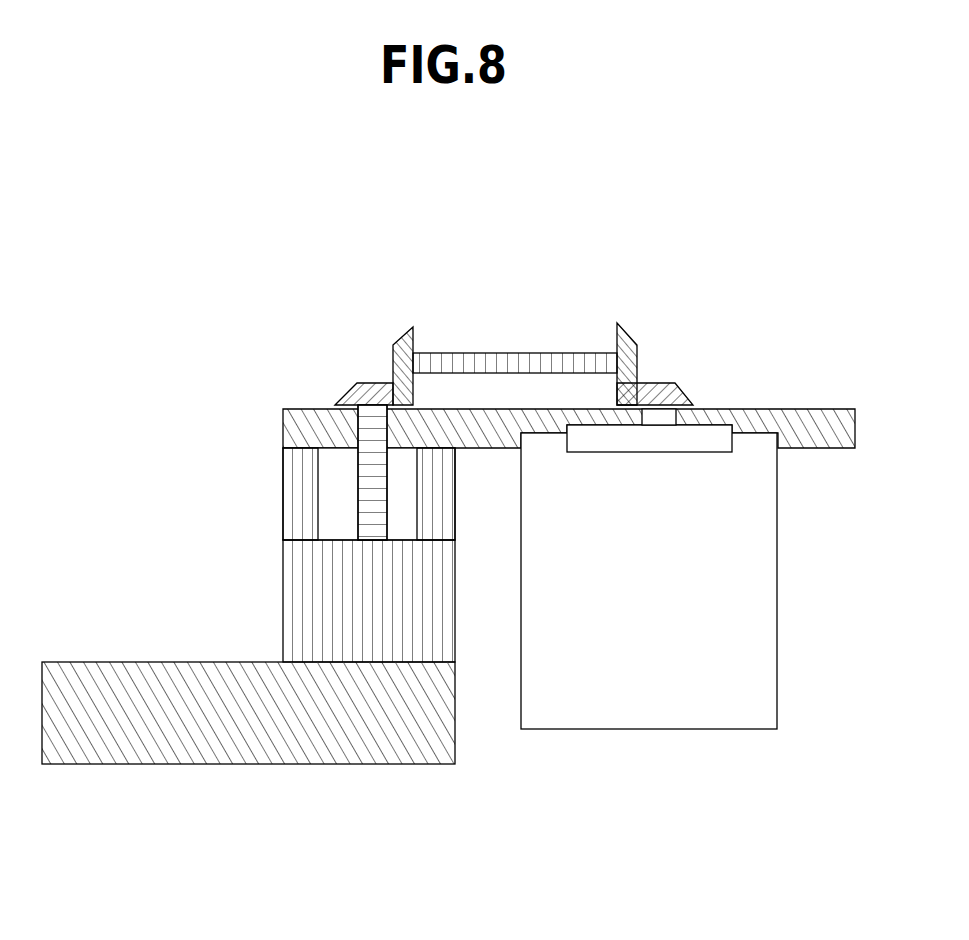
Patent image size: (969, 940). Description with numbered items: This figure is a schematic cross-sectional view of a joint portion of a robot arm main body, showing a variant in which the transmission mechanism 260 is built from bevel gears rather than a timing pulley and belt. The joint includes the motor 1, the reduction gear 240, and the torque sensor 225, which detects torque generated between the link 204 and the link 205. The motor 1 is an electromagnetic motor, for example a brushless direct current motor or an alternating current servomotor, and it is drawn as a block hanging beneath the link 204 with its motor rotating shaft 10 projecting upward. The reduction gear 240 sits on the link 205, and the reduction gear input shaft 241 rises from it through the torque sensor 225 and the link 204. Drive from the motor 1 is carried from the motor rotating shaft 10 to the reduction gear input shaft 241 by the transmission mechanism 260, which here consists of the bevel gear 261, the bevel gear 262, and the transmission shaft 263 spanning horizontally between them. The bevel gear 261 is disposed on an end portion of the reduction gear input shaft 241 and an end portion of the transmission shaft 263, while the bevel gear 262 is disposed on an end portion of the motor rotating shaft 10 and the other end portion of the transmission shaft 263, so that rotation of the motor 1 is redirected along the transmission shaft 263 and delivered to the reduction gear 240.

The motor 1 is at (768, 588).
The motor rotating shaft 10 is at (663, 410).
The link 204 is at (807, 418).
The link 205 is at (176, 742).
The torque sensor 225 is at (305, 518).
The reduction gear 240 is at (318, 617).
The reduction gear input shaft 241 is at (363, 481).
The transmission mechanism 260 is at (514, 286).
The bevel gear 261 is at (368, 385).
The bevel gear 262 is at (688, 387).
The transmission shaft 263 is at (515, 297).